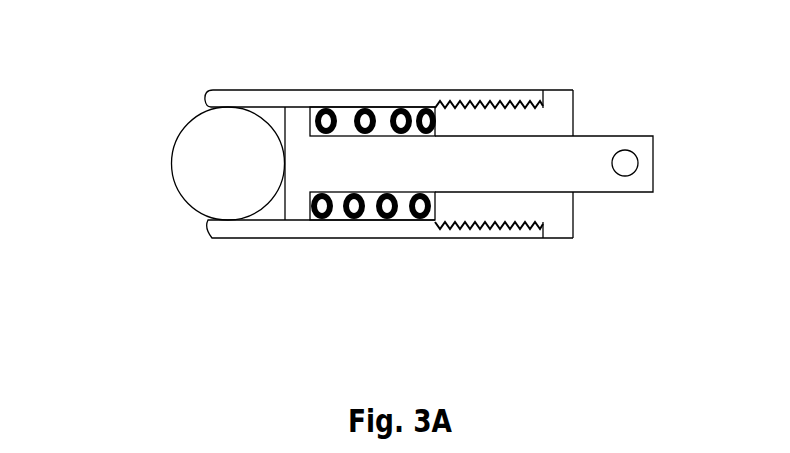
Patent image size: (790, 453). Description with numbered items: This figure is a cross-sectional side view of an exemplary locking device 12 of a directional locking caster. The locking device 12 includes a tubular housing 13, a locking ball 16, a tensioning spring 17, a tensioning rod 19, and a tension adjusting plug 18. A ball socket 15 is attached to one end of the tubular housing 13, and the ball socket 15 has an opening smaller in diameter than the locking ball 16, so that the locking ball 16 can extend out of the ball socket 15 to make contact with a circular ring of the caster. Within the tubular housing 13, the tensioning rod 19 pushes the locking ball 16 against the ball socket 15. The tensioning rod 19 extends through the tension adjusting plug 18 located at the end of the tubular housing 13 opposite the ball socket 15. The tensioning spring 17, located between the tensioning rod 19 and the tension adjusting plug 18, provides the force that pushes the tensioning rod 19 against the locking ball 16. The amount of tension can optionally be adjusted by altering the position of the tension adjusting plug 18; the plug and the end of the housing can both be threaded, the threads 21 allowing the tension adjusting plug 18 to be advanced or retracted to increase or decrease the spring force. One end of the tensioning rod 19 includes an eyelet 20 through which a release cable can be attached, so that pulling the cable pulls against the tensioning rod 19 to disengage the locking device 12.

The locking device 12 is at (112, 157).
The tubular housing 13 is at (335, 103).
The ball socket 15 is at (203, 222).
The locking ball 16 is at (195, 143).
The tensioning spring 17 is at (355, 216).
The tension adjusting plug 18 is at (562, 108).
The tensioning rod 19 is at (463, 155).
The eyelet 20 is at (633, 160).
The threads 21 is at (520, 226).